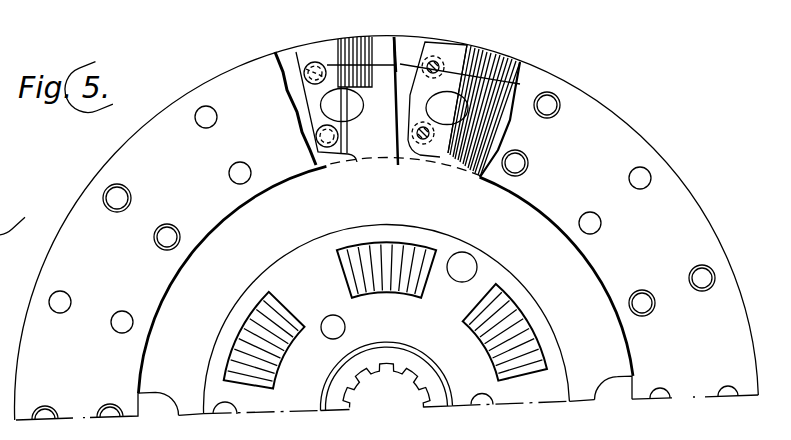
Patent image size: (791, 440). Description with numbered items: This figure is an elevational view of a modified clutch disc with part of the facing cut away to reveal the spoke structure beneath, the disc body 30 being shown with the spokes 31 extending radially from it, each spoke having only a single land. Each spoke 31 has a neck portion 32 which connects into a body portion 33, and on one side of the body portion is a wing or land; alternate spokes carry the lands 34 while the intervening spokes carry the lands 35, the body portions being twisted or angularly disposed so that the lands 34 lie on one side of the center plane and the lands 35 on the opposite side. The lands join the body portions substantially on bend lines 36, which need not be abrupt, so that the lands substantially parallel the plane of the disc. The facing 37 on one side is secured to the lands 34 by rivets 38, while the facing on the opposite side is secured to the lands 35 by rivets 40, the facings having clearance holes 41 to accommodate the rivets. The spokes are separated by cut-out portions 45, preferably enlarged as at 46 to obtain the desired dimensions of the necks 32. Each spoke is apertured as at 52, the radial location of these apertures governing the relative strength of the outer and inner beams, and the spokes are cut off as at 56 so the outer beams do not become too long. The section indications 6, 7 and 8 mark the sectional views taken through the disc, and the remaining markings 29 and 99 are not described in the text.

The section line 6- 6 is at (292, 105).
The section line 7- 7 is at (314, 36).
The section line 8- 8 is at (454, 35).
The driven disc 29 is at (387, 341).
The disc body 30 is at (484, 225).
The spokes 31 is at (497, 55).
The neck portion 32 is at (400, 179).
The body portion 33 is at (369, 52).
The wings or lands 34 is at (297, 53).
The wings or lands 35 is at (470, 44).
The bend lines 36 is at (349, 46).
The facing 37 is at (399, 43).
The rivets 38 is at (316, 84).
The rivets 40 is at (430, 75).
The clearance holes 41 is at (124, 193).
The cut-out portions 45 is at (394, 122).
The enlarged portions of cut-out 46 is at (326, 187).
The apertures 52 is at (323, 114).
The cut-off 56 is at (273, 53).
The outer ring 99 is at (590, 106).